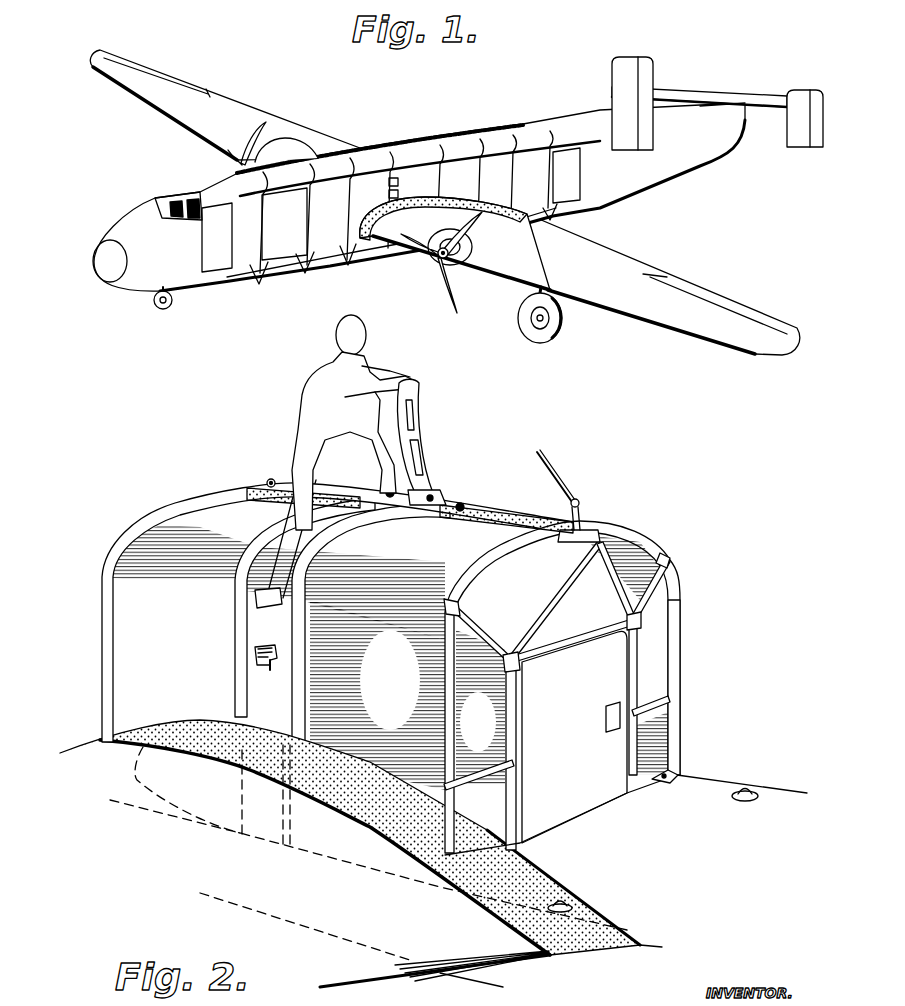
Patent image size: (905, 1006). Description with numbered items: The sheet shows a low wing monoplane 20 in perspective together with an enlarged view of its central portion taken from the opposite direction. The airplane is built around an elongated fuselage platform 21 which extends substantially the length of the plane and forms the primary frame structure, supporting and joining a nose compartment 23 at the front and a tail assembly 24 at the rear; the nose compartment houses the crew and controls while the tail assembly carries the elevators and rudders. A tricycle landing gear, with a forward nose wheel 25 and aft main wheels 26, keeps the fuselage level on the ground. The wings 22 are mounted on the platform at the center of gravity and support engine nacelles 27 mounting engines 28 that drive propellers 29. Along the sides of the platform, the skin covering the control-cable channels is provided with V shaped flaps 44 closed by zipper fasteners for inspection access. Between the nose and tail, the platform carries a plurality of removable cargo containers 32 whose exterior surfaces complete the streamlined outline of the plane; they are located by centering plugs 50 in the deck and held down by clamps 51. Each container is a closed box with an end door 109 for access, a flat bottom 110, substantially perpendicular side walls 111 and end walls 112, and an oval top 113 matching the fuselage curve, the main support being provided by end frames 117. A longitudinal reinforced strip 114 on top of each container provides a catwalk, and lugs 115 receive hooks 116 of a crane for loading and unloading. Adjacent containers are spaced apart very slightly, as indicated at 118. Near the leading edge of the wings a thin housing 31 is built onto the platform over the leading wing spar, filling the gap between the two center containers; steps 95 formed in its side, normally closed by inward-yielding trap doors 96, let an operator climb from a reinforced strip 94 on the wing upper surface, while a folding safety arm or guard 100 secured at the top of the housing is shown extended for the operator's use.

In FIG. 1, the low wing monoplane 20 is at (453, 202).
In FIG. 1, the fuselage platform 21 is at (375, 262).
In FIG. 1, the wings 22 is at (643, 273).
In FIG. 1, the nose compartment 23 is at (137, 230).
In FIG. 1, the tail assembly 24 is at (696, 163).
In FIG. 1, the forward nose wheel 25 is at (162, 309).
In FIG. 1, the aft main wheels 26 is at (563, 328).
In FIG. 1, the engine nacelles 27 is at (507, 233).
In FIG. 1, the engines 28 is at (470, 297).
In FIG. 1, the propellers 29 is at (447, 271).
In FIG. 1, the housing 31 is at (374, 148).
In FIG. 2, the housing 31 is at (255, 682).
In FIG. 1, the removable cargo containers 32 is at (270, 181).
In FIG. 2, the removable cargo containers 32 is at (123, 625).
In FIG. 1, the V shaped flaps 44 is at (260, 281).
In FIG. 2, the centering plugs 50 is at (729, 801).
In FIG. 2, the clamps 51 is at (667, 782).
In FIG. 2, the reinforced strip 94 is at (333, 760).
In FIG. 2, the steps 95 is at (270, 668).
In FIG. 2, the trap doors 96 is at (277, 655).
In FIG. 2, the safety arm or guard 100 is at (430, 432).
In FIG. 2, the doors 109 is at (587, 797).
In FIG. 2, the flat bottoms 110 is at (540, 840).
In FIG. 2, the side walls 111 is at (140, 685).
In FIG. 2, the end walls 112 is at (657, 622).
In FIG. 2, the oval top 113 is at (207, 520).
In FIG. 2, the longitudinal reinforced strip 114 is at (517, 510).
In FIG. 2, the lugs 115 is at (271, 480).
In FIG. 2, the hooks 116 is at (573, 503).
In FIG. 2, the end frames 117 is at (680, 660).
In FIG. 2, the space 118 is at (292, 628).